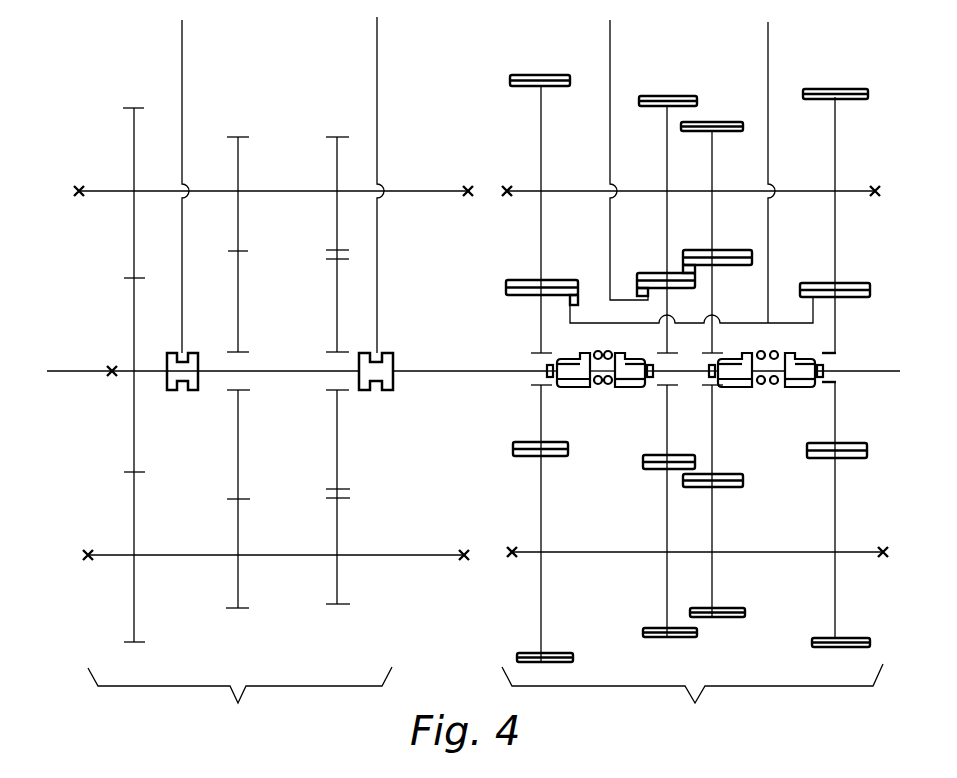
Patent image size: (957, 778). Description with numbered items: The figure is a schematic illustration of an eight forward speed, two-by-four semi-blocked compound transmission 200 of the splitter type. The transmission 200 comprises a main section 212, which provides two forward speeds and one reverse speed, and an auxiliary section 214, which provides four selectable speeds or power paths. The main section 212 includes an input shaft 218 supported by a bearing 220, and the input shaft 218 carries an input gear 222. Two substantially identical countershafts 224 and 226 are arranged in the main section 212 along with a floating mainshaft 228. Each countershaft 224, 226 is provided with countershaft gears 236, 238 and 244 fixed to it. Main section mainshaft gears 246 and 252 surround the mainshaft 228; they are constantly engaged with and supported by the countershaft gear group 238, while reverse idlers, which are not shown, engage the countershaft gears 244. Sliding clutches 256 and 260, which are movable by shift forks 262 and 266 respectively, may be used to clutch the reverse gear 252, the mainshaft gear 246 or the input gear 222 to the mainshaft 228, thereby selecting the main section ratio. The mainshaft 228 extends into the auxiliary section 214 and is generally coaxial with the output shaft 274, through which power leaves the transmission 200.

The semi-blocked compound transmission 200 is at (798, 76).
The main section 212 is at (240, 705).
The auxiliary section 214 is at (692, 702).
The input shaft 218 is at (73, 372).
The bearing 220 is at (114, 375).
The input gear 222 is at (134, 328).
The countershaft 224 is at (258, 191).
The countershaft 226 is at (297, 557).
The mainshaft 228 is at (413, 370).
The countershaft gear 236 is at (132, 133).
The countershaft gear 238 is at (238, 153).
The countershaft gear 244 is at (337, 155).
The mainshaft gear 246 is at (238, 335).
The reverse gear 252 is at (337, 297).
The sliding clutch 256 is at (385, 390).
The sliding clutch 260 is at (194, 390).
The shift fork 262 is at (377, 238).
The shift fork 266 is at (182, 278).
The output shaft 274 is at (860, 370).